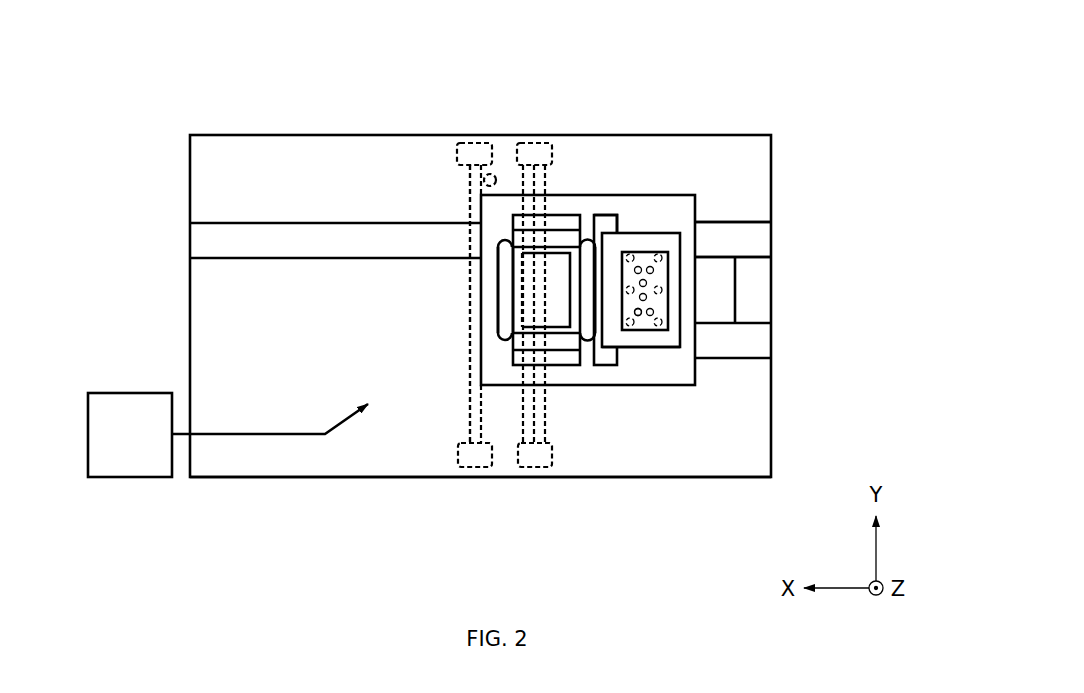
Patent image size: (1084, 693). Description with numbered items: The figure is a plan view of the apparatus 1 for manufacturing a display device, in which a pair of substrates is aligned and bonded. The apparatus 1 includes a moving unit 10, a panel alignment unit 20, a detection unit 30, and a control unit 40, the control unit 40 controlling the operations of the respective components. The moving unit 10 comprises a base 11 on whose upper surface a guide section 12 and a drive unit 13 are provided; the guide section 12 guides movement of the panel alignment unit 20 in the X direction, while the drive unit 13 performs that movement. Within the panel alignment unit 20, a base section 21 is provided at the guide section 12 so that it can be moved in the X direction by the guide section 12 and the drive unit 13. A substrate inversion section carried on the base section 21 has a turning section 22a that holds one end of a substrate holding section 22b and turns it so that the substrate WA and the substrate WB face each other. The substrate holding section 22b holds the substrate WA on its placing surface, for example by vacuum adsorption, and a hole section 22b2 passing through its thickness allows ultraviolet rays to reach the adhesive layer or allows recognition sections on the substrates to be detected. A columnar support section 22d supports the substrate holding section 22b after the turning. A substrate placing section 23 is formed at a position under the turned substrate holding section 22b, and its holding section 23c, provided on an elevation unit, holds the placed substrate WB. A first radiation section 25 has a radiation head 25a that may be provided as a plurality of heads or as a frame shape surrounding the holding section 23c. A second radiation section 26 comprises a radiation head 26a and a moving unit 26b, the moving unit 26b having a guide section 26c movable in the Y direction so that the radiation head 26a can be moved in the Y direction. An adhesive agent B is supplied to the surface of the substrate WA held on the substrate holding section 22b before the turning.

The apparatus for manufacturing a display device 1 is at (782, 104).
The moving unit 10 is at (756, 367).
The base 11 is at (290, 458).
The guide section 12 is at (756, 243).
The drive unit 13 is at (757, 293).
The panel alignment unit 20 is at (687, 398).
The base section 21 is at (657, 373).
The turning section 22a is at (603, 216).
The substrate holding section 22b is at (667, 350).
The hole section 22b2 is at (655, 327).
The support section 22d is at (505, 312).
The substrate placing section 23 is at (575, 375).
The holding section 23c is at (573, 270).
The first radiation section 25 is at (489, 246).
The radiation head 25a is at (566, 220).
The second radiation section 26 is at (442, 254).
The radiation head 26a is at (505, 178).
The moving unit 26b is at (414, 264).
The guide section 26c is at (483, 172).
The detection unit 30 is at (539, 131).
The control unit 40 is at (130, 412).
The adhesive agent B is at (638, 316).
The substrate WA is at (643, 252).
The substrate WB is at (558, 312).